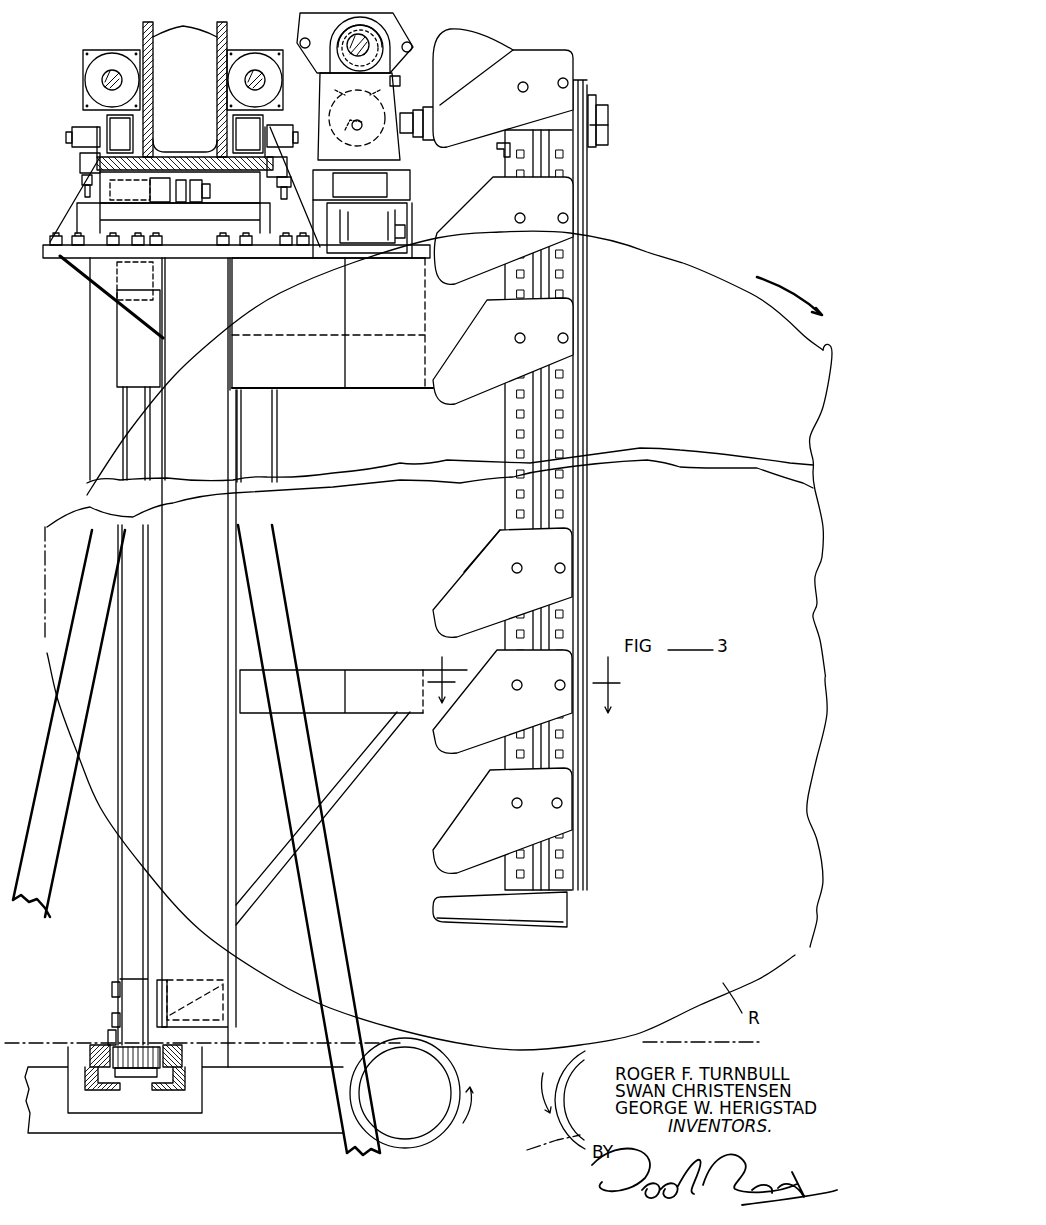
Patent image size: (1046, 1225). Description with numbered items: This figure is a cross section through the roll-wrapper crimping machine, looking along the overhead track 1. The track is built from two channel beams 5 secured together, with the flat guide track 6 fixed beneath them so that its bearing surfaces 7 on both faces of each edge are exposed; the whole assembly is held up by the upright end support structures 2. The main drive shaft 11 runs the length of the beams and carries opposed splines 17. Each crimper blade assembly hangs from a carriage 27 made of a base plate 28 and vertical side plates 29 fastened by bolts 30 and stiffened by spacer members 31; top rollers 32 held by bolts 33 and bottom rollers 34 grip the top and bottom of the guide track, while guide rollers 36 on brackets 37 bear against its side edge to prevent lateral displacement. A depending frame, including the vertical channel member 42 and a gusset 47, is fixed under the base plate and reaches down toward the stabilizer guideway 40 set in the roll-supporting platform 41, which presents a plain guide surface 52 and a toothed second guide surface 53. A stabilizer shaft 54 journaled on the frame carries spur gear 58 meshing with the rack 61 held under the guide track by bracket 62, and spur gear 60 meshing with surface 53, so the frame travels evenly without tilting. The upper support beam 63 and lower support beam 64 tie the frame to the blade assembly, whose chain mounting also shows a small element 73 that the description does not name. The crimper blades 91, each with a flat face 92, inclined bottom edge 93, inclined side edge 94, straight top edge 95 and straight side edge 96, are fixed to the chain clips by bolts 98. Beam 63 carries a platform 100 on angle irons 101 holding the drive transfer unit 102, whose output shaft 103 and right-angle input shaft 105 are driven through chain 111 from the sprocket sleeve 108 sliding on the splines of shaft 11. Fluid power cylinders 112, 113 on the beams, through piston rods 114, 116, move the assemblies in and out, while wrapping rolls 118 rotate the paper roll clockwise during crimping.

The overhead track 1 is at (180, 13).
The upright end support structure 2 is at (304, 638).
The channel beam 5 is at (145, 23).
The guide track 6 is at (210, 170).
The bearing surface 7 is at (252, 180).
The main drive shaft 11 is at (385, 42).
The splines 17 is at (370, 37).
The carriage 27 is at (48, 174).
The base plate 28 is at (62, 260).
The side plate 29 is at (80, 234).
The bolts 30 is at (48, 248).
The spacer member 31 is at (240, 247).
The top roller 32 is at (235, 134).
The bolts 33 is at (78, 128).
The bottom roller 34 is at (110, 193).
The guide roller 36 is at (85, 158).
The bracket 37 is at (85, 180).
The stabilizer guideway 40 is at (93, 1066).
The support platform 41 is at (195, 1110).
The vertical channel member 42 is at (207, 738).
The gusset 47 is at (93, 263).
The guide surface 52 is at (107, 1043).
The second guide surface 53 is at (180, 1045).
The stabilizer shaft 54 is at (149, 613).
The spur gear 58 is at (168, 202).
The spur gear 60 is at (131, 1077).
The rack 61 is at (185, 202).
The bracket 62 is at (198, 202).
The upper support beam 63 is at (386, 388).
The lower support beam 64 is at (383, 672).
The lug 73 is at (597, 118).
The crimper blade 91 is at (493, 100).
The flat face 92 is at (550, 352).
The inclined bottom edge 93 is at (548, 264).
The inclined side edge 94 is at (488, 196).
The top edge 95 is at (540, 180).
The side edge 96 is at (572, 210).
The bolts 98 is at (558, 565).
The platform 100 is at (362, 229).
The angle iron 101 is at (372, 233).
The drive transfer unit 102 is at (395, 162).
The drive output shaft 103 is at (413, 135).
The input shaft 105 is at (345, 128).
The sprocket sleeve 108 is at (395, 80).
The chain 111 is at (322, 18).
The fluid power cylinder 112 is at (90, 73).
The fluid power cylinder 113 is at (249, 62).
The piston rod 114 is at (110, 68).
The piston rod 116 is at (259, 70).
The wrapping roll 118 is at (440, 1117).